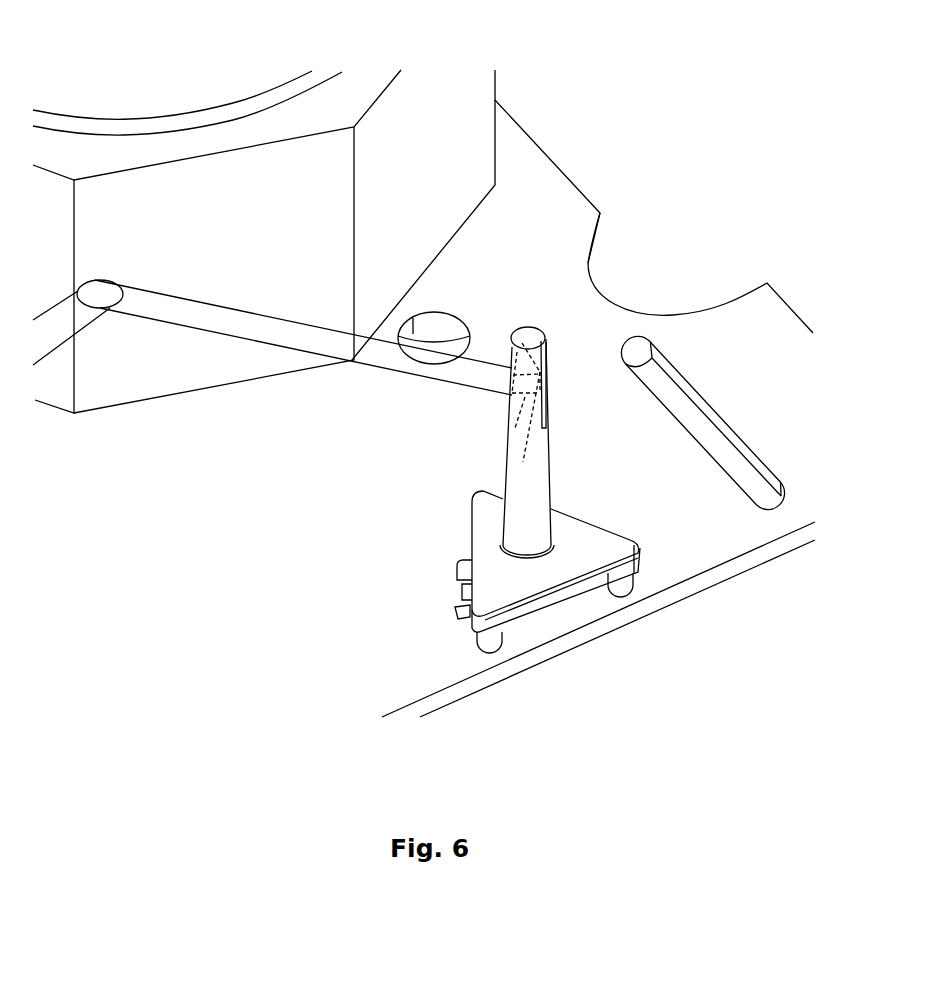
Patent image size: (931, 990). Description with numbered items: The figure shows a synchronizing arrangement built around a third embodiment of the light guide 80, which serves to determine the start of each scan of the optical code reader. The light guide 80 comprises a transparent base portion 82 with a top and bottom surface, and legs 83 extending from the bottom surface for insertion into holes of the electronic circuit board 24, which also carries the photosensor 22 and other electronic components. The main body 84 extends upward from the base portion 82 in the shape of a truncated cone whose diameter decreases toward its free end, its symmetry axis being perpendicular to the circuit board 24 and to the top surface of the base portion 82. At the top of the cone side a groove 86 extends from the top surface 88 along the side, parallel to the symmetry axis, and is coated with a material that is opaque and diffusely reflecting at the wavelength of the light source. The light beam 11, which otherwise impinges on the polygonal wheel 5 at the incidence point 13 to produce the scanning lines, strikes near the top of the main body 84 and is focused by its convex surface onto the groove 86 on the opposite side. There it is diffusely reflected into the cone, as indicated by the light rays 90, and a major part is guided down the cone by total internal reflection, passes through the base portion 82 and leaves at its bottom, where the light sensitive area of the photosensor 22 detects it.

The polygonal wheel 5 is at (503, 128).
The light beam 11 is at (286, 310).
The incidence point 13 is at (102, 290).
The photosensor 22 is at (450, 558).
The electronic circuit board 24 is at (338, 638).
The light guide 80 is at (450, 462).
The transparent base portion 82 is at (562, 560).
The legs 83 is at (625, 588).
The main body 84 is at (552, 403).
The groove 86 is at (547, 392).
The top surface 88 is at (528, 330).
The light rays 90 is at (512, 417).